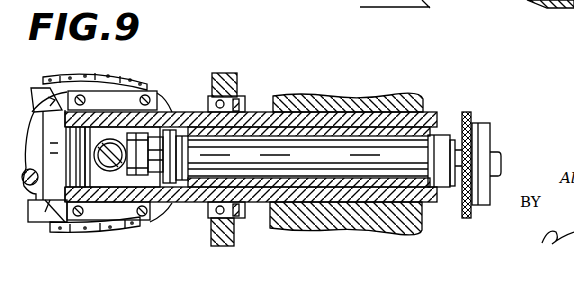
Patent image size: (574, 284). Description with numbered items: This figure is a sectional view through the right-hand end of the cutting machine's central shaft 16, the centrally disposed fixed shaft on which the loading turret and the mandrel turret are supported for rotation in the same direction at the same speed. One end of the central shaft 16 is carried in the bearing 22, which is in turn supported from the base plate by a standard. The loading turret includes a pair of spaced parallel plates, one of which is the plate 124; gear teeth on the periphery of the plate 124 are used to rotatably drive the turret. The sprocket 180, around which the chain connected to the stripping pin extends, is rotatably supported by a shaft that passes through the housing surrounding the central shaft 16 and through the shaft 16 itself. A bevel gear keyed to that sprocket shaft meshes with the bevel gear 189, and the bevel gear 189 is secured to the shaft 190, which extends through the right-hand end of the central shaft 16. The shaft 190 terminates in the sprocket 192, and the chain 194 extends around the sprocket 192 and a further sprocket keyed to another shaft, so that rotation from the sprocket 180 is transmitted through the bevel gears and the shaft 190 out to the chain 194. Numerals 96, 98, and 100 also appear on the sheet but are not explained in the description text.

The central shaft 16 is at (428, 120).
The bearing 22 is at (317, 108).
The shaft member 96 is at (487, 13).
The cap 98 is at (182, 7).
The housing portion 100 is at (431, 8).
The plate 124 is at (240, 84).
The sprocket 180 is at (118, 86).
The bevel gear 189 is at (166, 106).
The shaft 190 is at (294, 158).
The sprocket 192 is at (483, 140).
The chain 194 is at (465, 218).